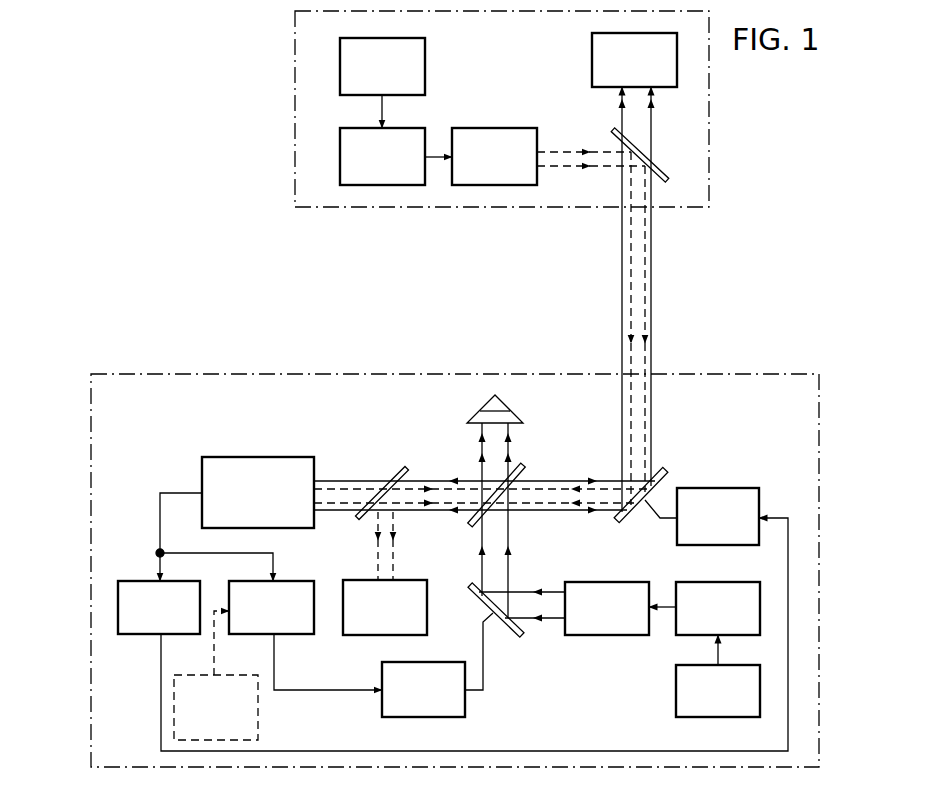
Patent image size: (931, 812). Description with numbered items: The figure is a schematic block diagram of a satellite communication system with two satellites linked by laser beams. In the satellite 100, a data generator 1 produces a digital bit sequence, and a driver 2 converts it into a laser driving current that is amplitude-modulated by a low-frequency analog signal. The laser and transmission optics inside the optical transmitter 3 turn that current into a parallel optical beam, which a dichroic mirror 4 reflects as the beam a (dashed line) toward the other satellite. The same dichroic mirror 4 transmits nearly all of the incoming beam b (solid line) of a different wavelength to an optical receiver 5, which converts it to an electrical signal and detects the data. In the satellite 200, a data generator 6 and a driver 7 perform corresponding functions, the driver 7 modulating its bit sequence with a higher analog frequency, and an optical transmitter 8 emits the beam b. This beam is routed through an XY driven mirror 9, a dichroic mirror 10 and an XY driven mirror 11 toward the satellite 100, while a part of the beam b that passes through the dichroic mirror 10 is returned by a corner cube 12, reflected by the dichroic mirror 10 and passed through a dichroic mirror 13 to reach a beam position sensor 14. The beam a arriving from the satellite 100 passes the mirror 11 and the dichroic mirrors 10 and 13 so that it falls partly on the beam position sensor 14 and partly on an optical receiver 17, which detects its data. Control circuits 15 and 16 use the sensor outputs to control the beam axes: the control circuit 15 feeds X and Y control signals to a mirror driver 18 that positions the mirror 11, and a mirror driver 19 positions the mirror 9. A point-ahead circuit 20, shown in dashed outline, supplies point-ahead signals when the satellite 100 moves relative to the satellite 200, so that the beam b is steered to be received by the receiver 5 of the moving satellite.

The satellite 100 is at (295, 45).
The satellite 200 is at (735, 373).
The data generator 1 is at (425, 69).
The driver 2 is at (340, 155).
The optical transmitter 3 is at (480, 127).
The dichroic mirror 4 is at (658, 171).
The optical receiver 5 is at (592, 71).
The data generator 6 is at (676, 684).
The driver 7 is at (700, 582).
The optical transmitter 8 is at (590, 582).
The XY driven mirror 9 is at (519, 636).
The dichroic mirror 10 is at (524, 476).
The XY driven mirror 11 is at (665, 474).
The corner cube 12 is at (515, 421).
The dichroic mirror 13 is at (398, 468).
The beam position sensor 14 is at (232, 457).
The control circuit 15 is at (140, 581).
The control circuit 16 is at (285, 582).
The optical receiver 17 is at (399, 581).
The mirror driver 18 is at (728, 488).
The mirror driver 19 is at (465, 703).
The point-ahead circuit 20 is at (258, 727).
The beam a is at (646, 333).
The beam b is at (652, 270).